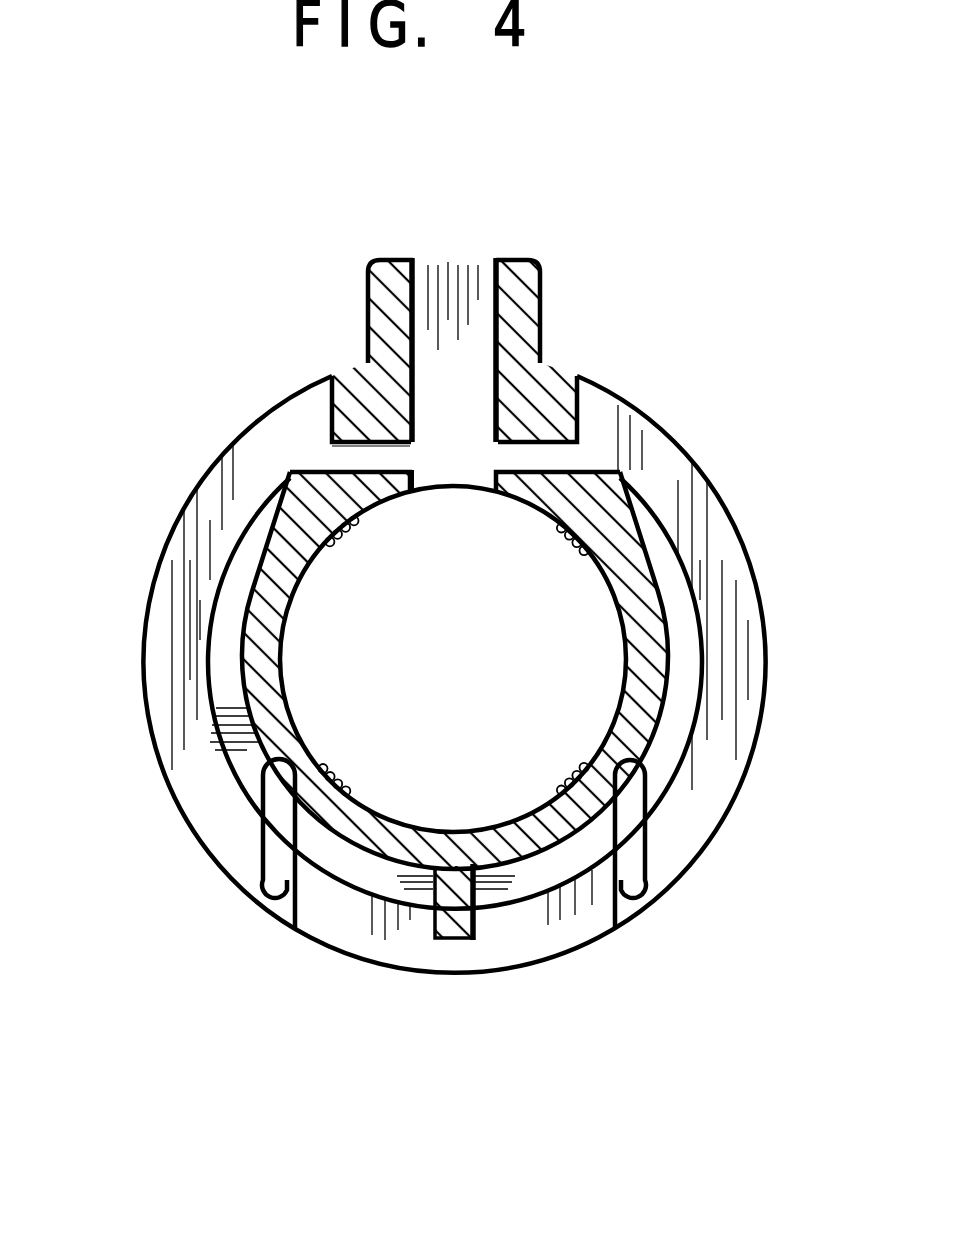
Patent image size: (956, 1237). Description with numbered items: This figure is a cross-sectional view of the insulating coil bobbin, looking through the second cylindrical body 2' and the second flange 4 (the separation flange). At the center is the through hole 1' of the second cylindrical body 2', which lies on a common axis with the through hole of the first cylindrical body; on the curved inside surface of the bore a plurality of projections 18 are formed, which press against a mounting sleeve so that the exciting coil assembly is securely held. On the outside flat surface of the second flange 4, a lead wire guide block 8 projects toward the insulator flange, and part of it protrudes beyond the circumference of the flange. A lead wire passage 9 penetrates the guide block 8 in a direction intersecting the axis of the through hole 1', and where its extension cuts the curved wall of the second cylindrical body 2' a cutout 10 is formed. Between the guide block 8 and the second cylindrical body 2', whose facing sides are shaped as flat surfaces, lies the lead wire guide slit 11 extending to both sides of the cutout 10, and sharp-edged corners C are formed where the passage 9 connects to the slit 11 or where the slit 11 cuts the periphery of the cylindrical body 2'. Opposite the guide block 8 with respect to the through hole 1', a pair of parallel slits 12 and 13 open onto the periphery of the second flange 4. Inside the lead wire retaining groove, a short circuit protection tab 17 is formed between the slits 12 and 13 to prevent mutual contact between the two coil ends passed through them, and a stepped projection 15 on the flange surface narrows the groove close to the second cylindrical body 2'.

The through hole 1' is at (564, 659).
The second cylindrical body 2' is at (521, 639).
The second flange 4 is at (718, 766).
The lead wire guide block 8 is at (542, 408).
The lead wire passage 9 is at (492, 300).
The cutout 10 is at (433, 488).
The lead wire guide slit 11 is at (383, 458).
The slit 12 is at (275, 898).
The slit 13 is at (632, 893).
The stepped projection 15 is at (232, 578).
The short circuit protection tab 17 is at (455, 938).
The projections 18 is at (570, 545).
The sharp-edged corners C is at (288, 467).